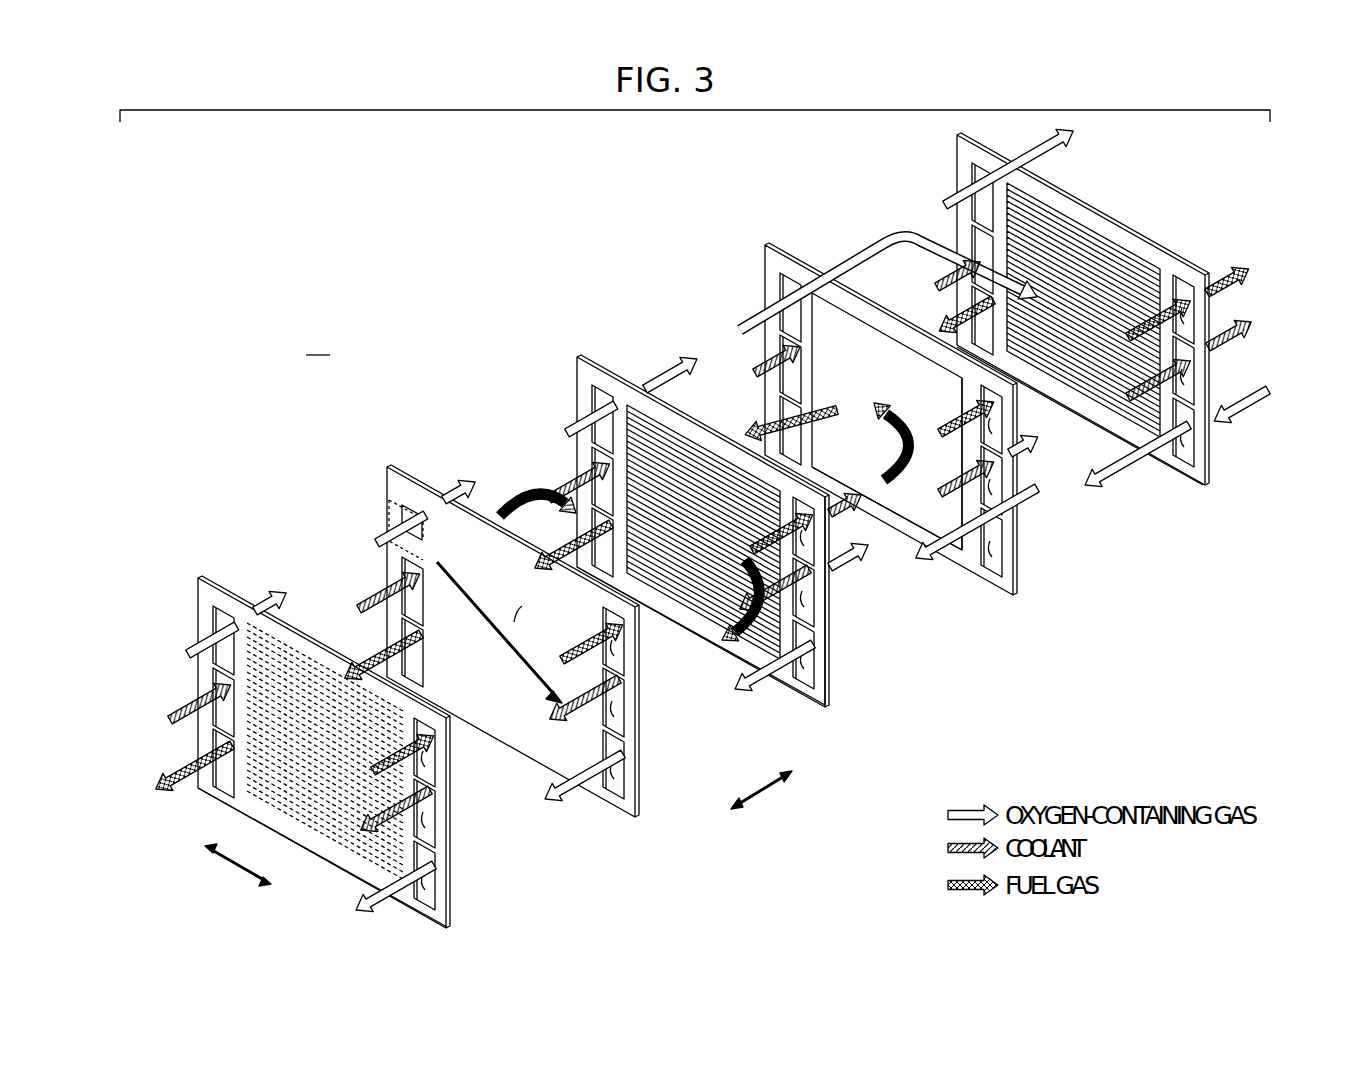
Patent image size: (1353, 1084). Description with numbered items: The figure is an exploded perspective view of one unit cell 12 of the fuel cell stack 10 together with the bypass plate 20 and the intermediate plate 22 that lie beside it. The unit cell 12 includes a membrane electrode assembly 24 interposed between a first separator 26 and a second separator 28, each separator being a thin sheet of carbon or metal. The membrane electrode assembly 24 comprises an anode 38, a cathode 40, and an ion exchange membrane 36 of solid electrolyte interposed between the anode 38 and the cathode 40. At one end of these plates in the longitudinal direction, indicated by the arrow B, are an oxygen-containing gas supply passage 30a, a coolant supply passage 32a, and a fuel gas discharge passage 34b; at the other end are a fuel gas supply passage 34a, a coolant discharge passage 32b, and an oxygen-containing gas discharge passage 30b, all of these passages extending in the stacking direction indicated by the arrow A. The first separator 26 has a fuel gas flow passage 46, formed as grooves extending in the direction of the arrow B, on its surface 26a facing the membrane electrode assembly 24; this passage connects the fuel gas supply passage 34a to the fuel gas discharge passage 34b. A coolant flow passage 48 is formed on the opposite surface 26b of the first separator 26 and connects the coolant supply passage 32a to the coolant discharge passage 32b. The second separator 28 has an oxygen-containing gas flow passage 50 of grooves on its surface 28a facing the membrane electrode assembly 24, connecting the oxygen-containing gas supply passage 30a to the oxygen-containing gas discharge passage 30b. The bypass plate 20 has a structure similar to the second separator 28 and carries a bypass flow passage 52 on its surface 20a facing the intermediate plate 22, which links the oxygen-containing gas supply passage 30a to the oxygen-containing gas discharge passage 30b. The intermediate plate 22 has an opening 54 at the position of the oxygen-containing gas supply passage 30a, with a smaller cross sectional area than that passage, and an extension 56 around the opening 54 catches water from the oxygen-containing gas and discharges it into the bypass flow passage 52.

The fuel cell stack 10 is at (318, 342).
The unit cell 12 is at (676, 186).
The bypass plate 20 is at (216, 584).
The surface of bypass plate 20a is at (392, 900).
The intermediate plate 22 is at (409, 467).
The membrane electrode assembly 24 is at (792, 251).
The first separator 26 is at (598, 359).
The surface of first separator 26a is at (775, 676).
The surface of first separator 26b is at (706, 630).
The second separator 28 is at (1099, 206).
The surface of second separator 28a is at (1190, 468).
The oxygen-containing gas supply passage 30a is at (216, 614).
The oxygen-containing gas discharge passage 30b is at (433, 884).
The coolant supply passage 32a is at (216, 676).
The coolant discharge passage 32b is at (433, 822).
The fuel gas supply passage 34a is at (433, 760).
The fuel gas discharge passage 34b is at (216, 740).
The ion exchange membrane 36 is at (992, 580).
The anode 38 is at (900, 518).
The cathode 40 is at (858, 335).
The fuel gas flow passage 46 is at (713, 472).
The coolant flow passage 48 is at (668, 462).
The oxygen-containing gas flow passage 50 is at (1130, 283).
The bypass flow passage 52 is at (333, 838).
The opening 54 is at (424, 532).
The extension 56 is at (424, 547).